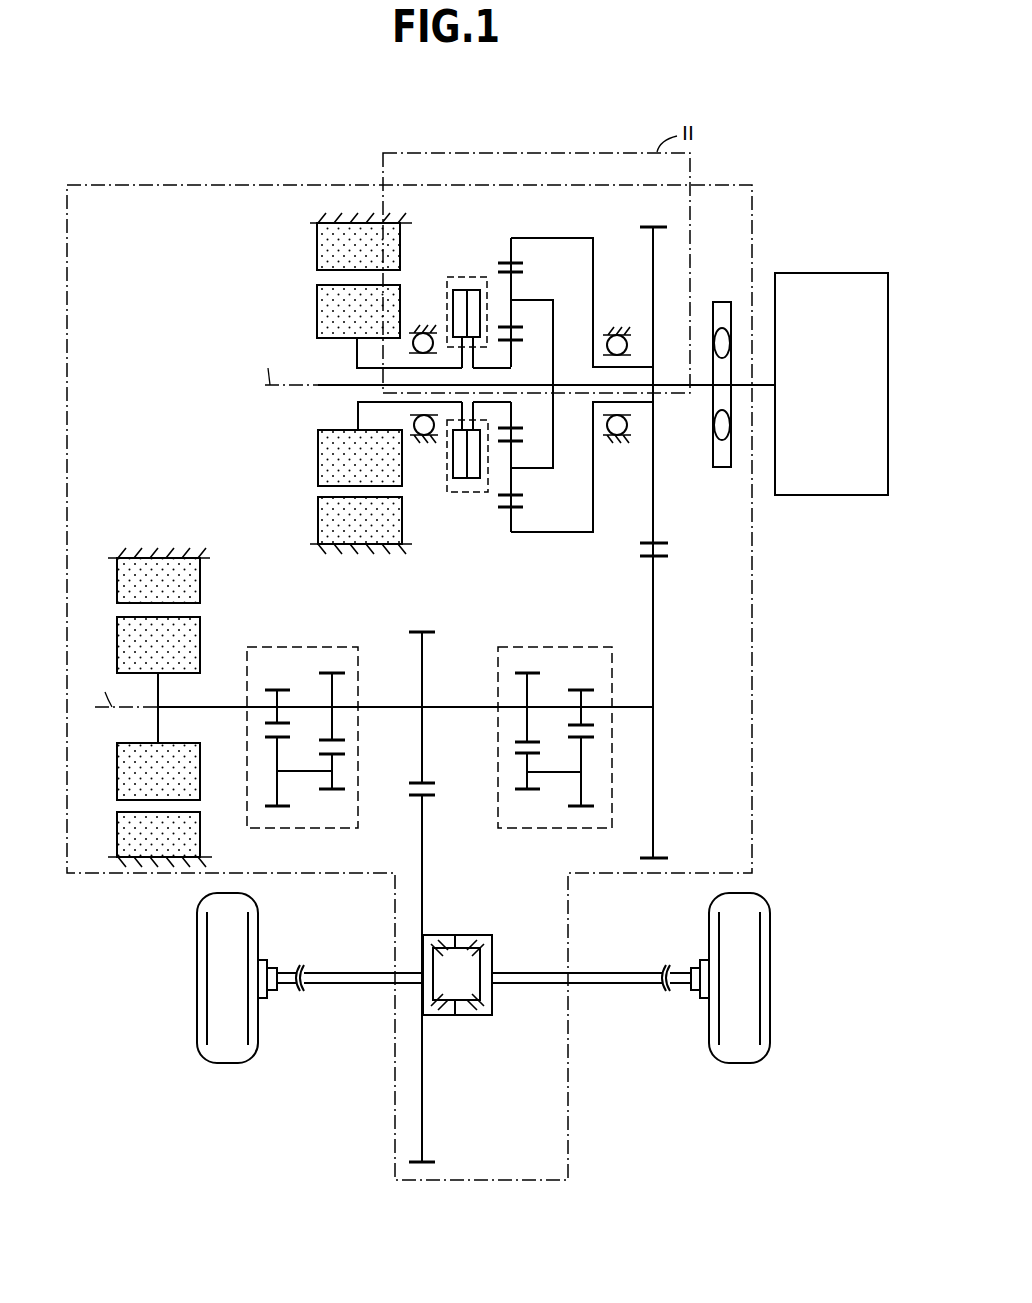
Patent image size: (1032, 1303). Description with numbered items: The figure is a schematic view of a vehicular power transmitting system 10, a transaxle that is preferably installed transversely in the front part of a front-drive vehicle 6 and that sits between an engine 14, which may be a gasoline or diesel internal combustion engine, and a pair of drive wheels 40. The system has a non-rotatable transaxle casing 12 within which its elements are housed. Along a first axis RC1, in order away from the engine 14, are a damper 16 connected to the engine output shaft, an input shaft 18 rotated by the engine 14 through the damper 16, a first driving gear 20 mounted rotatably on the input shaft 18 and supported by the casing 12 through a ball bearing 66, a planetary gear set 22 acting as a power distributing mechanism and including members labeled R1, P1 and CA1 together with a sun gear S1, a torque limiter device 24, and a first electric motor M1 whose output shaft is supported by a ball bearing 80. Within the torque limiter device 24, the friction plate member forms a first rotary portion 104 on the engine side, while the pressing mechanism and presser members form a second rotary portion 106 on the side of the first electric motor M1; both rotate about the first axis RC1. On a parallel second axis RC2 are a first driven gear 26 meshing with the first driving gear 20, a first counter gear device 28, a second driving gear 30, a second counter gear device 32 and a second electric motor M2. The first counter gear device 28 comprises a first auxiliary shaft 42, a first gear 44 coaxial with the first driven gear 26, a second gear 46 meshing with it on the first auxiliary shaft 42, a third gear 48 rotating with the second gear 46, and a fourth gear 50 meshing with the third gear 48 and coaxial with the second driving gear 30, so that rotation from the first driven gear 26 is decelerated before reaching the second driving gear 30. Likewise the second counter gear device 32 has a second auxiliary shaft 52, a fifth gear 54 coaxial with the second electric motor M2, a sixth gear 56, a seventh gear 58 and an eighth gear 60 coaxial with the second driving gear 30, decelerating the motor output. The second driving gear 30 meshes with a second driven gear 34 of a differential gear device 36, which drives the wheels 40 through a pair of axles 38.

The vehicular power transmitting system 10 is at (103, 68).
The vehicle 6 is at (864, 36).
The transaxle casing 12 is at (330, 222).
The engine 14 is at (812, 290).
The damper 16 is at (723, 302).
The input shaft 18 is at (683, 385).
The first driving gear 20 is at (650, 225).
The planetary gear set 22 is at (568, 362).
The torque limiter device 24 is at (446, 351).
The first driven gear 26 is at (660, 557).
The first counter gear device 28 is at (590, 647).
The second driving gear 30 is at (425, 632).
The second counter gear device 32 is at (268, 647).
The second driven gear 34 is at (427, 798).
The differential gear device 36 is at (492, 925).
The axles 38 is at (341, 984).
The drive wheels 40 is at (232, 1052).
The first auxiliary shaft 42 is at (560, 773).
The first gear 44 is at (590, 690).
The second gear 46 is at (580, 807).
The third gear 48 is at (520, 790).
The fourth gear 50 is at (527, 672).
The second auxiliary shaft 52 is at (293, 773).
The fifth gear 54 is at (270, 690).
The sixth gear 56 is at (277, 808).
The seventh gear 58 is at (340, 790).
The eighth gear 60 is at (337, 673).
The ball bearing 66 is at (617, 333).
The ball bearing 80 is at (423, 333).
The first rotary portion 104 is at (468, 290).
The second rotary portion 106 is at (462, 296).
The first electric motor M1 is at (414, 385).
The second electric motor M2 is at (158, 708).
The ring gear R1 is at (497, 219).
The pinion gear P1 is at (519, 276).
The carrier CA1 is at (572, 287).
The sun gear S1 is at (515, 343).
The first axis RC1 is at (262, 364).
The second axis RC2 is at (363, 687).